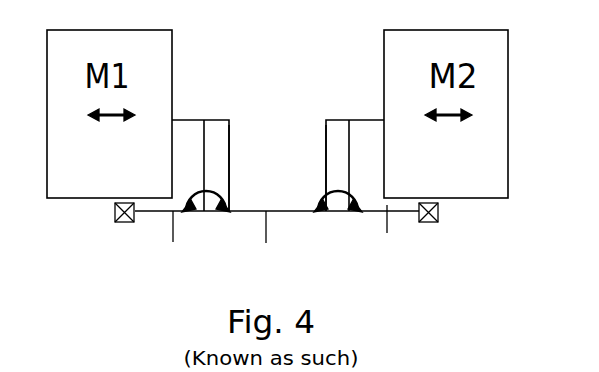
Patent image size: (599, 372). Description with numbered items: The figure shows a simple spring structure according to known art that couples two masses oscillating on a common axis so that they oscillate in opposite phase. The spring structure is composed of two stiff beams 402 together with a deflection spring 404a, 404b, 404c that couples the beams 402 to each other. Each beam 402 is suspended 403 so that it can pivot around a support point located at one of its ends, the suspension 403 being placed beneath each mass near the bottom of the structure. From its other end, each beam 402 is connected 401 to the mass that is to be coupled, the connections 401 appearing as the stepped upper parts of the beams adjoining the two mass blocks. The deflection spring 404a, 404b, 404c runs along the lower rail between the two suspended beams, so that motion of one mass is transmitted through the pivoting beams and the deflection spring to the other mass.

The connection 401 is at (360, 120).
The stiff beam 402 is at (326, 160).
The suspension 403 is at (115, 221).
The deflection spring 404a is at (173, 242).
The deflection spring 404b is at (266, 243).
The deflection spring 404c is at (387, 233).